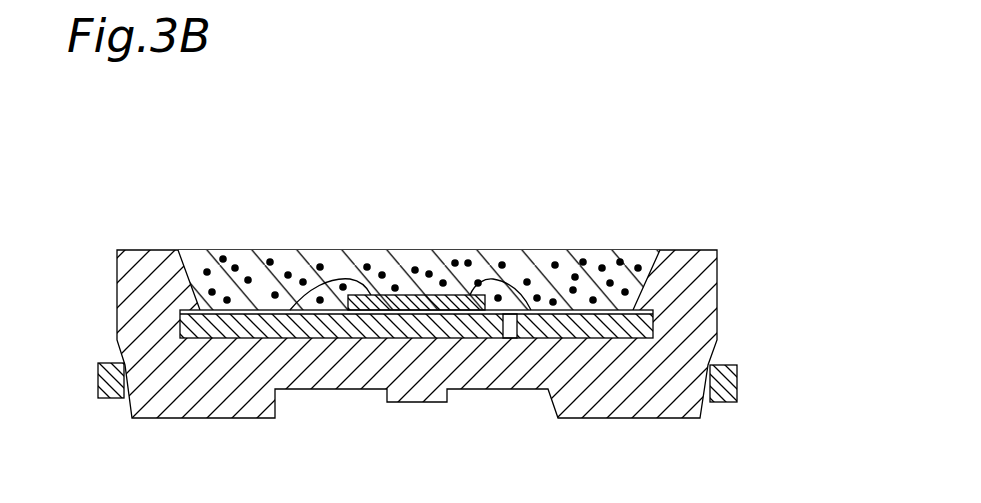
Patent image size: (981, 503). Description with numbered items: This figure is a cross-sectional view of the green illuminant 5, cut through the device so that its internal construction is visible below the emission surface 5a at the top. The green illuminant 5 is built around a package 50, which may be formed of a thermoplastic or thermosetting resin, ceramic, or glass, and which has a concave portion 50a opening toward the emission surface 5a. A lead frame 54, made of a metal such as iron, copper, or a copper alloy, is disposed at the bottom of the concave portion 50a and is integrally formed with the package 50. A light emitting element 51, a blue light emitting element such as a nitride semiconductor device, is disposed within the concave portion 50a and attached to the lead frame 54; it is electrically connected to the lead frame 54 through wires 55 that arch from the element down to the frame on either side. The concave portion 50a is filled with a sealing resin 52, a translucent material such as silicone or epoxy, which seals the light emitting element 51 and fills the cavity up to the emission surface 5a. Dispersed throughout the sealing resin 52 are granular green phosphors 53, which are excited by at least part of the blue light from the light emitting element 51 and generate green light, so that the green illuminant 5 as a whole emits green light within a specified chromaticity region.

The green illuminant 5 is at (660, 157).
The emission surface 5a is at (353, 257).
The package 50 is at (700, 311).
The concave portion 50a is at (633, 278).
The light emitting element 51 is at (406, 295).
The sealing resin 52 is at (307, 270).
The green phosphors 53 is at (270, 258).
The lead frame 54 is at (426, 325).
The wires 55 is at (517, 272).